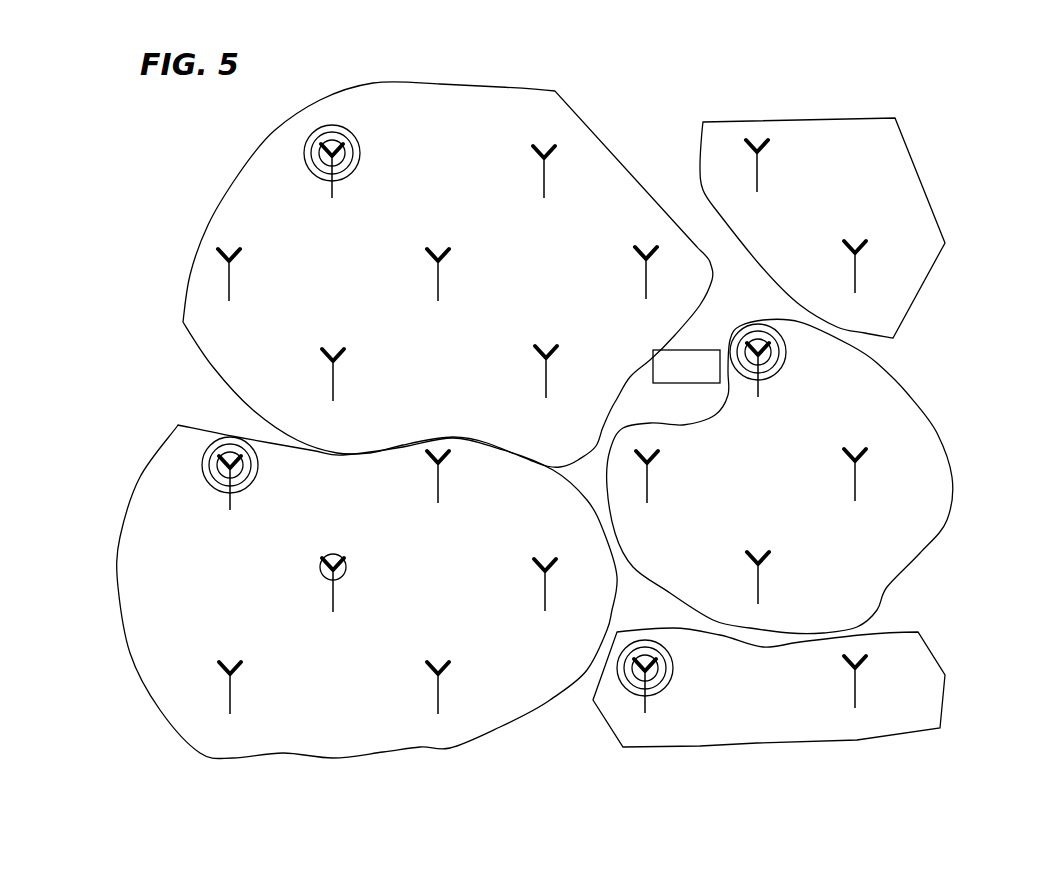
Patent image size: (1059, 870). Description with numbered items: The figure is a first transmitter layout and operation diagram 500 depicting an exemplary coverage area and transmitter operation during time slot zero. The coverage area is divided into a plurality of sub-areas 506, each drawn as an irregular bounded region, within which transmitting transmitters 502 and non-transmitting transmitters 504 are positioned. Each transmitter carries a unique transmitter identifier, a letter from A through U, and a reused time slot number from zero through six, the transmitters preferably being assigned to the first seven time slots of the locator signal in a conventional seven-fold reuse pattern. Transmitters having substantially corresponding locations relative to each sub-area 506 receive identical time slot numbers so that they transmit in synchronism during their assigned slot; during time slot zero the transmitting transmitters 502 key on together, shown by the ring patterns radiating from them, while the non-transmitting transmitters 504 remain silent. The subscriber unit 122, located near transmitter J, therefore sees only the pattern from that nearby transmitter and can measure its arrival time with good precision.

The first transmitter layout and operation diagram 500 is at (251, 24).
The transmitting transmitters 502 is at (337, 127).
The non-transmitting transmitters 504 is at (542, 170).
The sub-areas 506 is at (577, 98).
The subscriber unit 122 is at (678, 350).